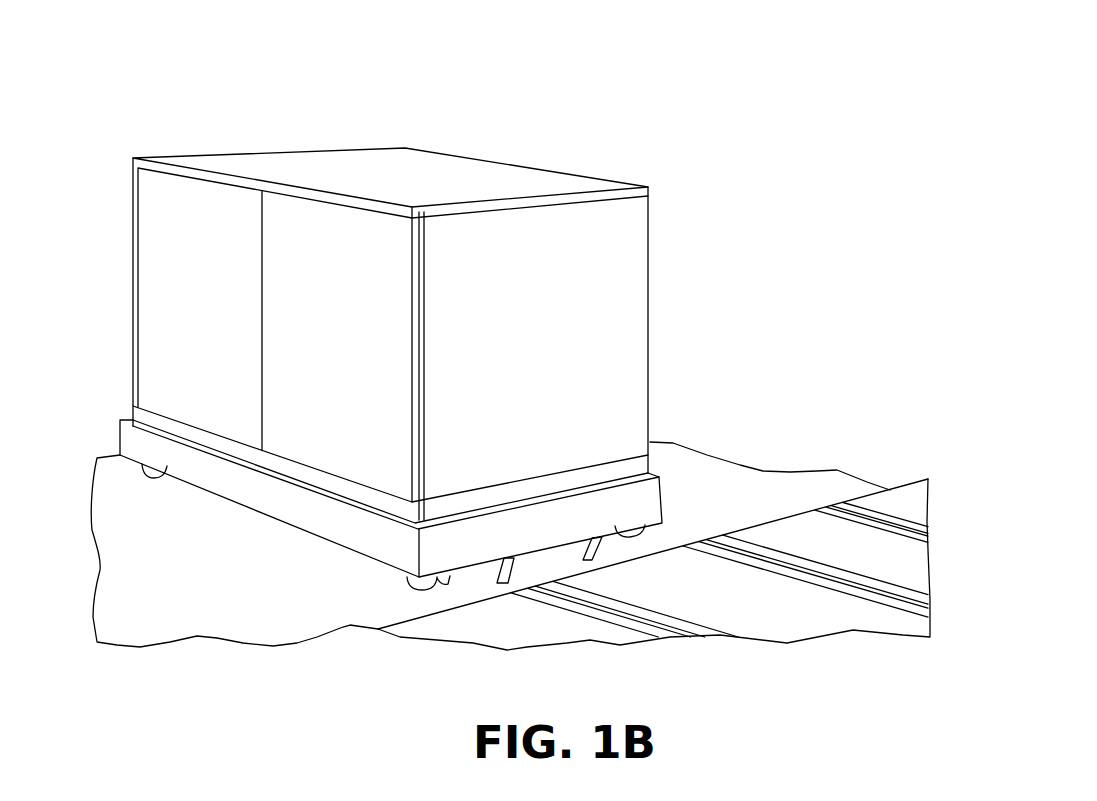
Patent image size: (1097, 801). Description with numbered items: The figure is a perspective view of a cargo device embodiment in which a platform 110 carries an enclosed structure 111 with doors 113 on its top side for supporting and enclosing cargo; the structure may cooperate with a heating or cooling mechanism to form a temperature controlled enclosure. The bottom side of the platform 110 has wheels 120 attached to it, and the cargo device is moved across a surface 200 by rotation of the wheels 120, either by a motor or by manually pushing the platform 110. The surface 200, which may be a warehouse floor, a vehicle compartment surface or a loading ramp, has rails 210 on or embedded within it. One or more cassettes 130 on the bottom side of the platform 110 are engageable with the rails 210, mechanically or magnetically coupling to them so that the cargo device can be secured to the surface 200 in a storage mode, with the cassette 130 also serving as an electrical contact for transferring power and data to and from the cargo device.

The platform 110 is at (200, 483).
The structure 111 is at (633, 332).
The doors 113 is at (343, 232).
The wheels 120 is at (407, 588).
The cassette 130 is at (513, 572).
The surface 200 is at (278, 612).
The rails 210 is at (627, 610).